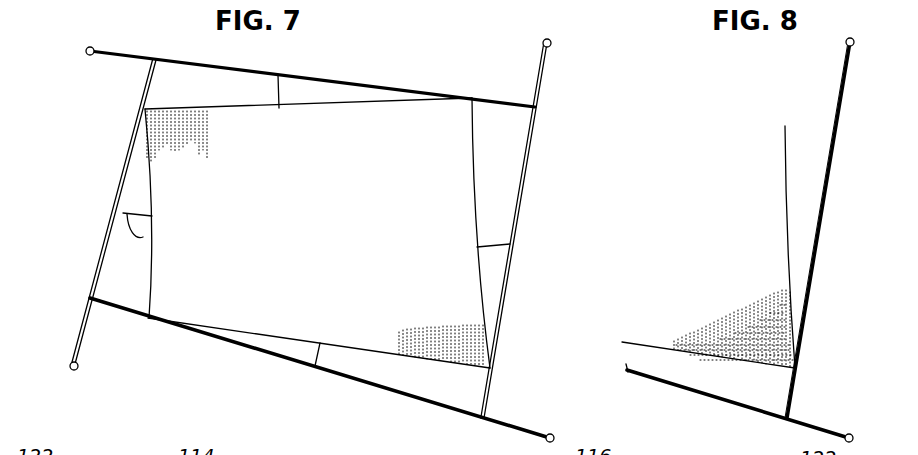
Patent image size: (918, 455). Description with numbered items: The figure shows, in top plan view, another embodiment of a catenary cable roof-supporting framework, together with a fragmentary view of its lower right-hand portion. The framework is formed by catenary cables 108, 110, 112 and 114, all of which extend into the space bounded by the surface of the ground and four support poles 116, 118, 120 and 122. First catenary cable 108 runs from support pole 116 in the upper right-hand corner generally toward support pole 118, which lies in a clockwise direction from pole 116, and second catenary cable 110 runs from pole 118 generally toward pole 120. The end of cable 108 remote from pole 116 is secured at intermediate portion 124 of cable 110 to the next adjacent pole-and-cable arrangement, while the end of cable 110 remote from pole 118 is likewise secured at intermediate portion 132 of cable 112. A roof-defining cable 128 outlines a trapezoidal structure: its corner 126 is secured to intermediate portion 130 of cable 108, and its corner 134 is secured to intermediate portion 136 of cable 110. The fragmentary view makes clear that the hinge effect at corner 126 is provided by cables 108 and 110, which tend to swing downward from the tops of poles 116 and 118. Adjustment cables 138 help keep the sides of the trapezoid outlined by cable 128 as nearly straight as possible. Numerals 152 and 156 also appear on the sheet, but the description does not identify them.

In FIG. 7, the catenary cable 108 is at (518, 217).
In FIG. 8, the catenary cable 108 is at (822, 218).
In FIG. 7, the catenary cable 110 is at (355, 379).
In FIG. 8, the catenary cable 110 is at (711, 398).
In FIG. 7, the catenary cable 112 is at (127, 165).
In FIG. 7, the catenary cable 114 is at (356, 82).
In FIG. 7, the support pole 116 is at (550, 47).
In FIG. 8, the support pole 116 is at (846, 43).
In FIG. 7, the support pole 118 is at (555, 434).
In FIG. 8, the support pole 118 is at (849, 433).
In FIG. 7, the support pole 120 is at (59, 369).
In FIG. 7, the support pole 122 is at (90, 47).
In FIG. 7, the intermediate portion 124 is at (483, 422).
In FIG. 8, the intermediate portion 124 is at (785, 420).
In FIG. 7, the corner 126 is at (487, 366).
In FIG. 8, the corner 126 is at (793, 365).
In FIG. 7, the roof-defining cable 128 is at (472, 163).
In FIG. 8, the roof-defining cable 128 is at (784, 158).
In FIG. 7, the intermediate portion 130 is at (496, 369).
In FIG. 8, the intermediate portion 130 is at (797, 372).
In FIG. 7, the intermediate portion 132 is at (93, 297).
In FIG. 7, the corner 134 is at (152, 316).
In FIG. 7, the intermediate portion 136 is at (148, 320).
In FIG. 7, the adjustment cables 138 is at (282, 96).
In FIG. 7, the fastener 152 is at (141, 450).
In FIG. 7, the fastener 156 is at (298, 447).